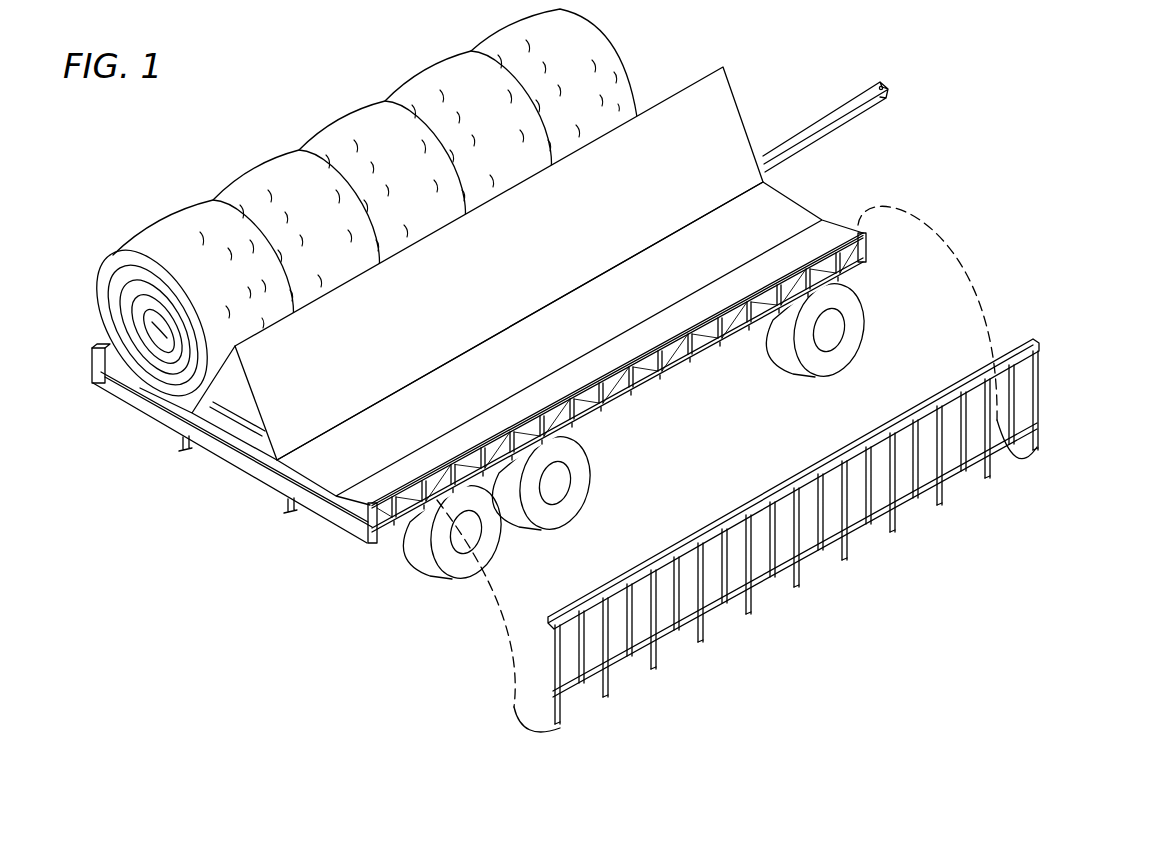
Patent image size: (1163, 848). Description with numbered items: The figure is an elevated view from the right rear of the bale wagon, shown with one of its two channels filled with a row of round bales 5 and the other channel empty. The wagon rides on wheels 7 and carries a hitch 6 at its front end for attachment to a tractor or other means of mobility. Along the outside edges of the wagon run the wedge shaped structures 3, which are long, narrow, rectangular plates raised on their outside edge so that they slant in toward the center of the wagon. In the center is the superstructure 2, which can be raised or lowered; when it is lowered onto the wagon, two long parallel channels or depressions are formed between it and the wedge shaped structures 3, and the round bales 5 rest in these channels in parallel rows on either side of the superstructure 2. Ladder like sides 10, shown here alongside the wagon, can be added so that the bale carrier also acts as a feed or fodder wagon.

The superstructure 2 is at (741, 70).
The wedge shaped structures 3 is at (826, 220).
The round bales 5 is at (455, 43).
The hitch 6 is at (893, 105).
The wheels 7 is at (866, 321).
The ladder like sides 10 is at (1082, 390).